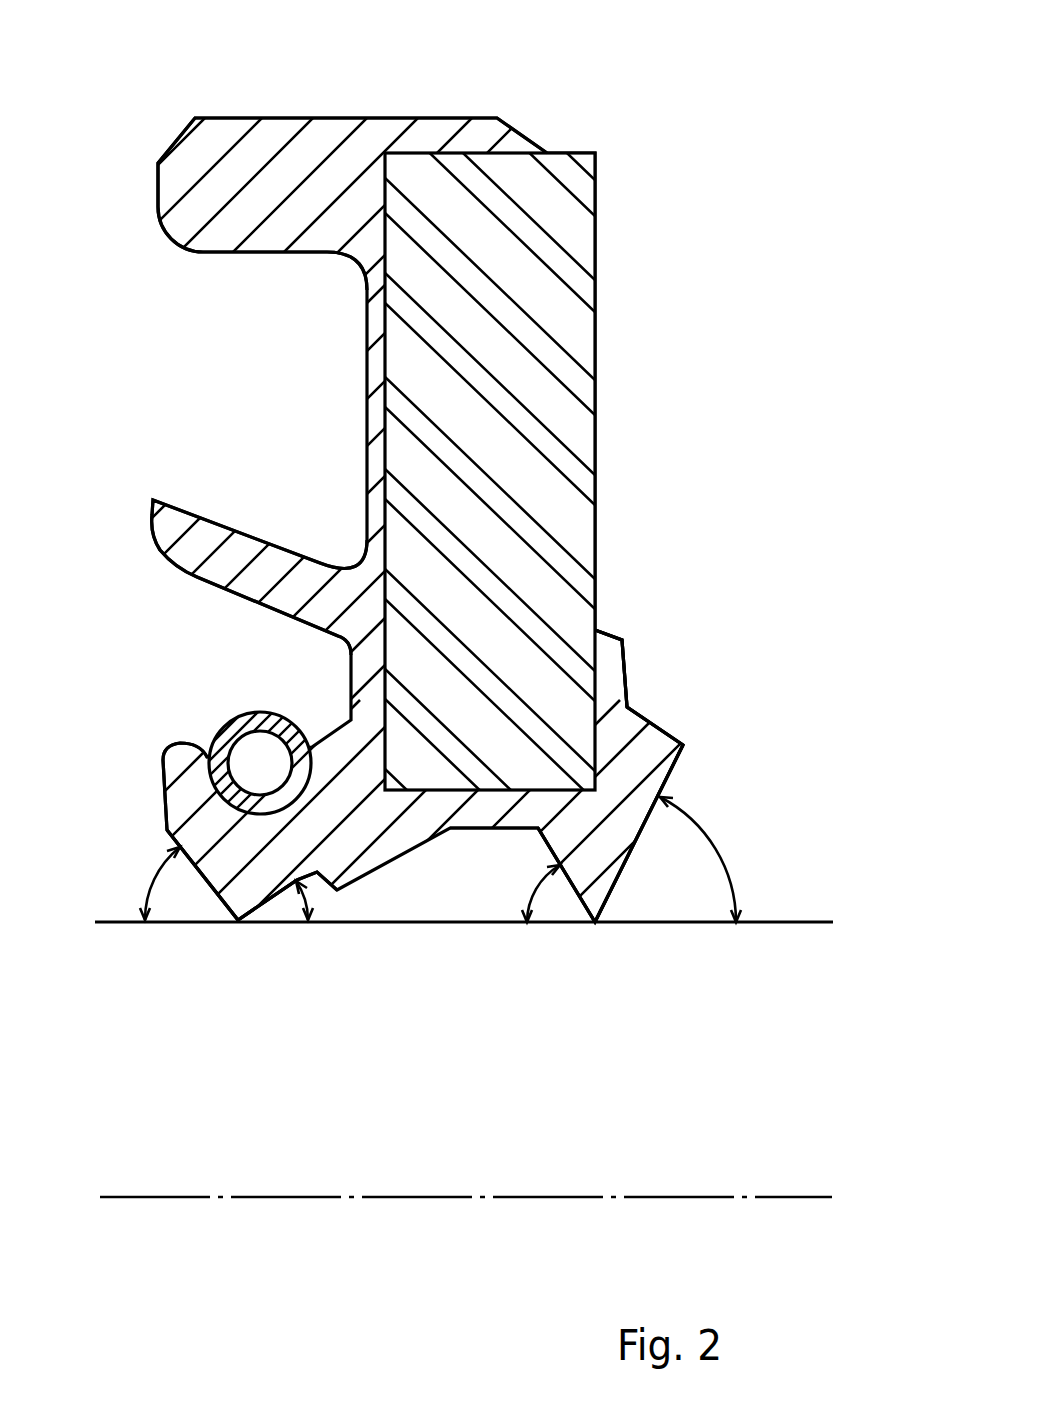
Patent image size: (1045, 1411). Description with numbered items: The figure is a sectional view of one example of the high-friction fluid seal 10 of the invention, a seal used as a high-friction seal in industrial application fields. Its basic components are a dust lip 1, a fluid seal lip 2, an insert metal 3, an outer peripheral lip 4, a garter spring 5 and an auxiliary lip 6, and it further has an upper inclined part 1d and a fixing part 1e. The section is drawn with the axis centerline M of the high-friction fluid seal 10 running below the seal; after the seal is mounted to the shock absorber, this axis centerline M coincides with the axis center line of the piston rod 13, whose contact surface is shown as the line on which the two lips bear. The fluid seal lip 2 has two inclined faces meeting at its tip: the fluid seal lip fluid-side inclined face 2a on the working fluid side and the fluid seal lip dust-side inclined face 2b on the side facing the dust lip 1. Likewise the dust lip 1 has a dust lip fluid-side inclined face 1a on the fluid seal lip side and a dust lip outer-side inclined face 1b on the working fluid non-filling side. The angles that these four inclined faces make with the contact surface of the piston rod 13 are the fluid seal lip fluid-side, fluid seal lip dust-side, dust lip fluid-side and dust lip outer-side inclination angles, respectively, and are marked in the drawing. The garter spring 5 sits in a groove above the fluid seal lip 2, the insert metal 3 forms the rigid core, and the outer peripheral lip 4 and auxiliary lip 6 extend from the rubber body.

The dust lip 1 is at (597, 942).
The dust lip fluid-side inclined face 1a is at (567, 922).
The dust lip outer-side inclined face 1b is at (633, 922).
The upper inclined part 1d is at (658, 729).
The fixing part 1e is at (597, 632).
The fluid seal lip 2 is at (235, 937).
The fluid seal lip fluid-side inclined face 2a is at (188, 922).
The fluid seal lip dust-side inclined face 2b is at (267, 927).
The insert metal 3 is at (597, 255).
The outer peripheral lip 4 is at (236, 131).
The garter spring 5 is at (230, 724).
The auxiliary lip 6 is at (180, 522).
The high-friction fluid seal 10 is at (620, 135).
The piston rod 13 is at (780, 922).
The axis centerline M is at (790, 1197).